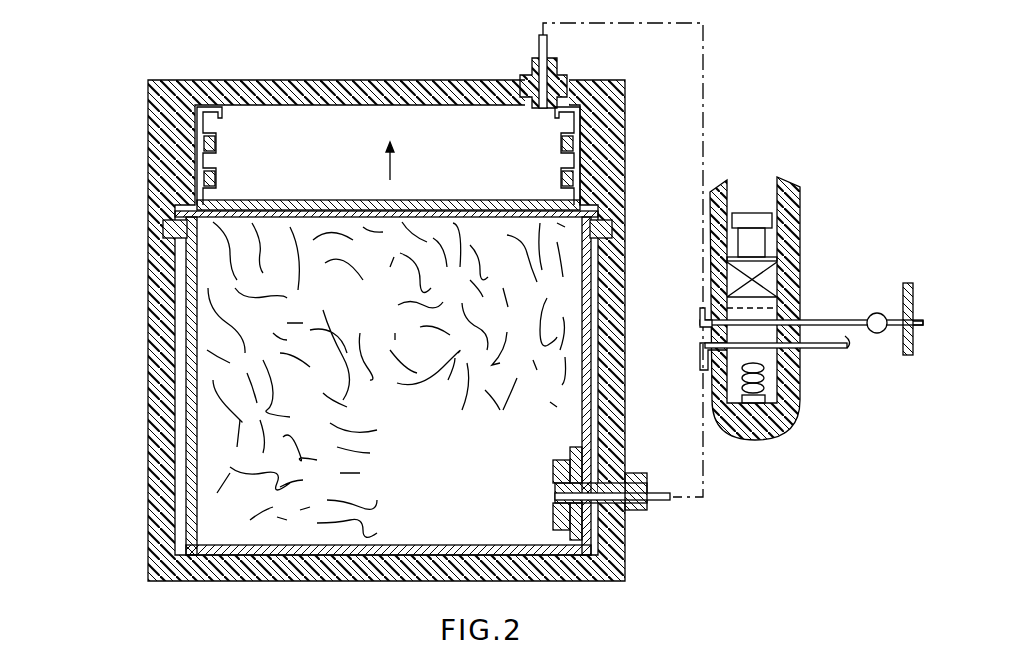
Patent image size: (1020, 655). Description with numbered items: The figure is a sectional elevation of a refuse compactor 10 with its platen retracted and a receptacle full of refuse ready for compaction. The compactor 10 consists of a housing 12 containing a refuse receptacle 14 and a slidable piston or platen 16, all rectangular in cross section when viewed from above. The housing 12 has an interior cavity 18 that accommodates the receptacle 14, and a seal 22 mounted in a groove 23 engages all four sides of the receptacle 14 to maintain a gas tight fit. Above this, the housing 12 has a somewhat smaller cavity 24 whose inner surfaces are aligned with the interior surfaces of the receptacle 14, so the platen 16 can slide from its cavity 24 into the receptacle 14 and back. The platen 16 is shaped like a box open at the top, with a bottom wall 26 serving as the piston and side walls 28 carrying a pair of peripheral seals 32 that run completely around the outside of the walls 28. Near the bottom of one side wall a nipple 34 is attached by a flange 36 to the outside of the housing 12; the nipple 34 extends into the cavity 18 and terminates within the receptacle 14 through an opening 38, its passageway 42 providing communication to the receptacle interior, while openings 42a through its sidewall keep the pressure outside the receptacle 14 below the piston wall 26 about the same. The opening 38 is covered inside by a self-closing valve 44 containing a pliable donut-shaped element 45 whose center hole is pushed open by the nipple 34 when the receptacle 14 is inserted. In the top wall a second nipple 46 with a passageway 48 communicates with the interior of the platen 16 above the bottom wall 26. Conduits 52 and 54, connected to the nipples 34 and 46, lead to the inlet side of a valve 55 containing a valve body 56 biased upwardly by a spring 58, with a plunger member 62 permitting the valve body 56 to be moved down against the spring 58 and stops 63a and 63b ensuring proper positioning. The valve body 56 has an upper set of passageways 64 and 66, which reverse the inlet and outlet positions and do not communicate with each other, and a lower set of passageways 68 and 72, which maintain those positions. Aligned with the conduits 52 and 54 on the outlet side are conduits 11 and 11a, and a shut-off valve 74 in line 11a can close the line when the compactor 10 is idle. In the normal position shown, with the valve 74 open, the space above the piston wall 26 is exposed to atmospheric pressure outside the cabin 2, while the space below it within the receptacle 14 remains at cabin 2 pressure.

The cabin 2 is at (908, 356).
The compactor 10 is at (132, 284).
The conduit 11 is at (847, 345).
The conduit 11a is at (845, 318).
The housing 12 is at (148, 470).
The refuse receptacle 14 is at (187, 352).
The platen 16 is at (338, 159).
The interior cavity 18 is at (182, 555).
The seal 22 is at (178, 248).
The groove 23 is at (168, 232).
The cavity 24 is at (207, 104).
The bottom wall 26 is at (410, 200).
The side walls 28 is at (210, 117).
The peripheral seals 32 is at (200, 178).
The nipple 34 is at (640, 515).
The flange 36 is at (647, 488).
The opening 38 is at (556, 503).
The passageway 42 is at (612, 565).
The openings 42a is at (625, 483).
The self-closing valve 44 is at (626, 415).
The donut-shaped element 45 is at (550, 560).
The second nipple 46 is at (567, 72).
The passageway 48 is at (530, 63).
The conduit 52 is at (703, 395).
The conduit 54 is at (705, 106).
The valve 55 is at (800, 185).
The valve body 56 is at (768, 256).
The spring 58 is at (765, 392).
The plunger member 62 is at (755, 213).
The stop 63a is at (773, 260).
The stop 63b is at (740, 415).
The passageway 64 is at (800, 275).
The passageway 66 is at (745, 268).
The passageway 68 is at (706, 340).
The passageway 72 is at (762, 347).
The shut-off valve 74 is at (880, 312).